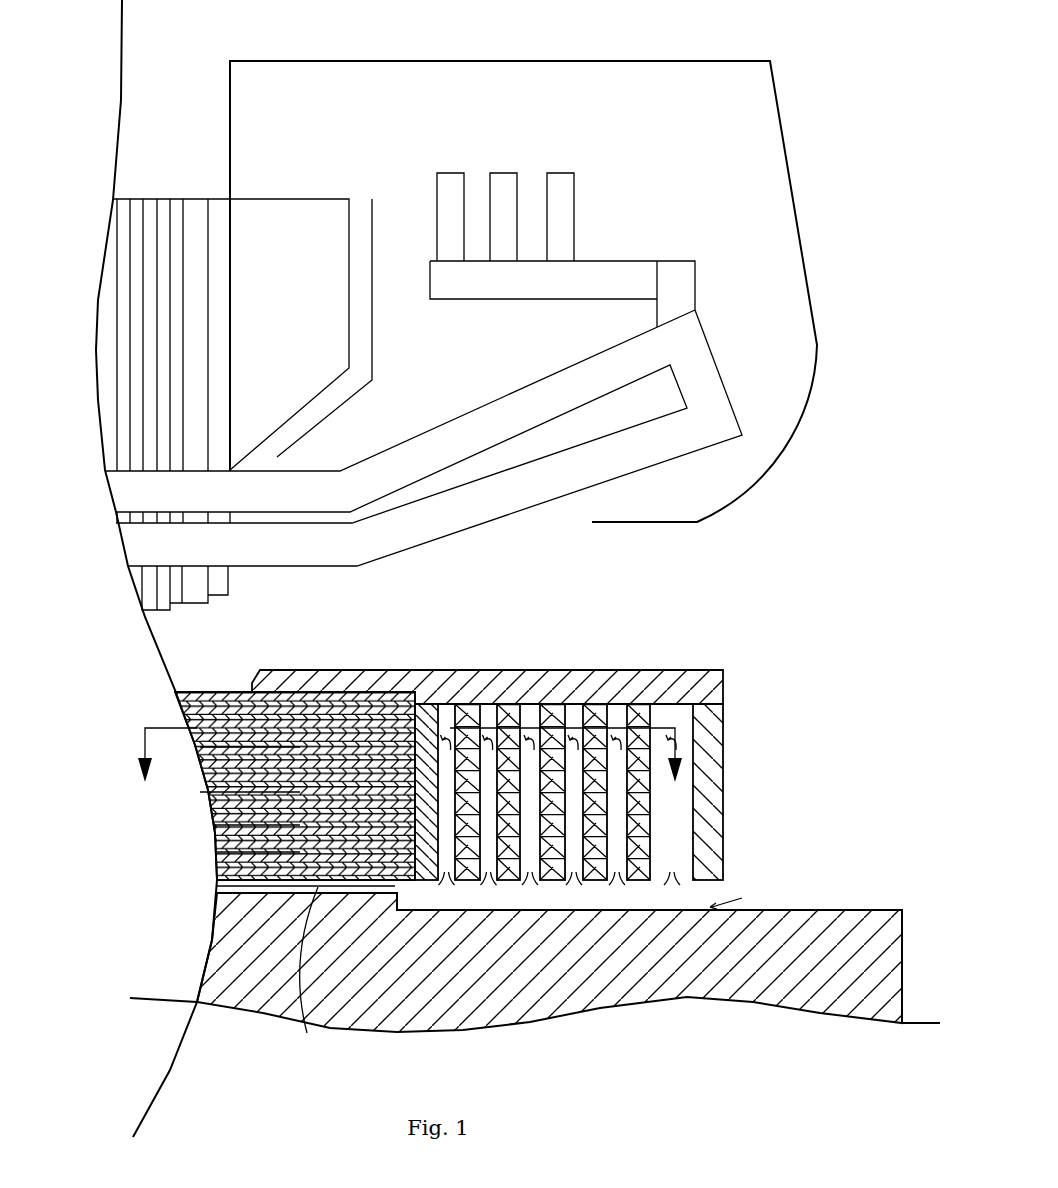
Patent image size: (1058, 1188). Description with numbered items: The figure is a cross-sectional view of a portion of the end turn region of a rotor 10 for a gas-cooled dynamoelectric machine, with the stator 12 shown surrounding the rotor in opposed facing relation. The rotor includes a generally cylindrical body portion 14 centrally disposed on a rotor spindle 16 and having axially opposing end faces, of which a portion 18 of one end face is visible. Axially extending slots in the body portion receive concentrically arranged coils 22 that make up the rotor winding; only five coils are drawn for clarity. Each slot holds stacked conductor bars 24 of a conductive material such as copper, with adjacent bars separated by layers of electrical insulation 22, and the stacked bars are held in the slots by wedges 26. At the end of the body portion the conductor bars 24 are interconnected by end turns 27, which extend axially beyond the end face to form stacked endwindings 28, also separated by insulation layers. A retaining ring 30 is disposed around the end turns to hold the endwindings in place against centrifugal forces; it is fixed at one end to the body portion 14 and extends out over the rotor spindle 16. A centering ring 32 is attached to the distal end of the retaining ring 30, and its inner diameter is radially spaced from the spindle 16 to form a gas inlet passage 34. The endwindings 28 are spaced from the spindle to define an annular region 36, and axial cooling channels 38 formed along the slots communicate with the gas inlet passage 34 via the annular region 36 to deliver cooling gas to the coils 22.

The rotor 10 is at (820, 659).
The stator 12 is at (840, 254).
The body portion 14 is at (220, 948).
The rotor spindle 16 is at (698, 985).
The portion of one end face 18 is at (386, 889).
The coils / layers of electrical insulation 22 is at (210, 792).
The conductor bars 24 is at (215, 852).
The wedges 26 is at (182, 698).
The end turns 27 is at (532, 899).
The stacked endwindings 28 is at (643, 888).
The retaining ring 30 is at (498, 672).
The centering ring 32 is at (712, 773).
The gas inlet passage 34 is at (735, 886).
The annular region 36 is at (564, 909).
The axial cooling channels 38 is at (307, 976).